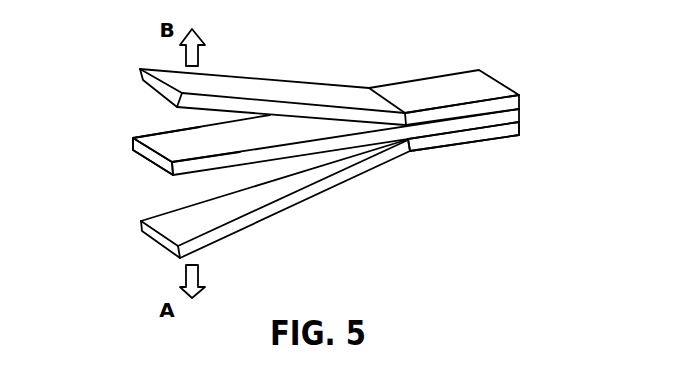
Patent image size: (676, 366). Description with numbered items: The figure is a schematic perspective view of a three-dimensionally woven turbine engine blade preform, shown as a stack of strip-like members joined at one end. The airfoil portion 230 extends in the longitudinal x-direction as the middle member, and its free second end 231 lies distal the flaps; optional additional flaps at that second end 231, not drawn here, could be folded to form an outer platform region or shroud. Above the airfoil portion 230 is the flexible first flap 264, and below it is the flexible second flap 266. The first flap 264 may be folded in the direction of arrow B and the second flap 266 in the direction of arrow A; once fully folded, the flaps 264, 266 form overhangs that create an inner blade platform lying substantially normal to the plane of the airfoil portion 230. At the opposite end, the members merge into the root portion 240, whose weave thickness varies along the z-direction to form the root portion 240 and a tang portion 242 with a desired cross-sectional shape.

The first flap 264 is at (141, 75).
The airfoil portion 230 is at (207, 137).
The second end 231 is at (133, 146).
The second flap 266 is at (155, 237).
The root portion 240 is at (481, 124).
The tang portion 242 is at (433, 140).